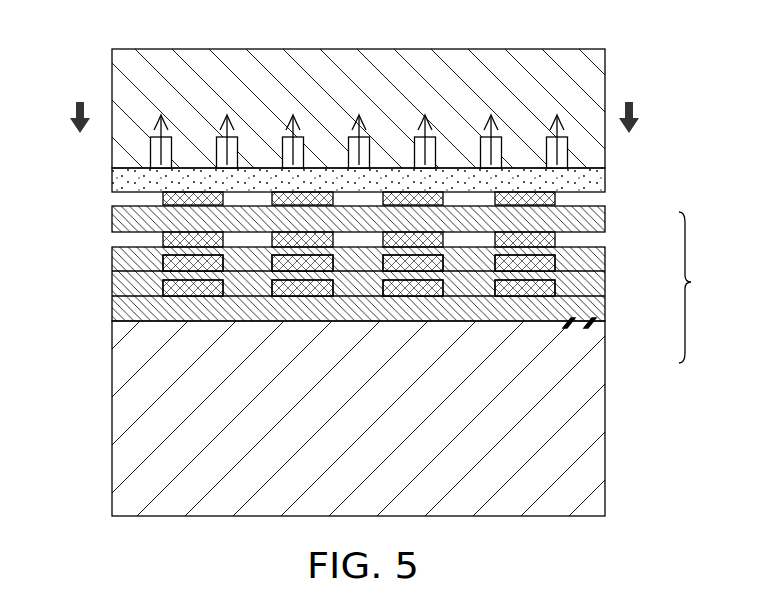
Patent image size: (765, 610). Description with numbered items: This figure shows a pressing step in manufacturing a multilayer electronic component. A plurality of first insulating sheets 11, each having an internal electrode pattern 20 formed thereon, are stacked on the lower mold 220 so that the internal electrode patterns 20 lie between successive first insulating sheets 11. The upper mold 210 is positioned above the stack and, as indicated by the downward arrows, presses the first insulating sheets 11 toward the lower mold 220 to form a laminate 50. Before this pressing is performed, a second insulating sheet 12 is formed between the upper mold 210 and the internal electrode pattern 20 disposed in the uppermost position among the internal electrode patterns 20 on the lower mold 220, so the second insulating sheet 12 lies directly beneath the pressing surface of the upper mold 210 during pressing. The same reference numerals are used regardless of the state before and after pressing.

The upper mold 210 is at (596, 66).
The lower mold 220 is at (605, 432).
The second insulating sheet 12 is at (112, 171).
The first insulating sheet 11 is at (112, 226).
The internal electrode pattern 20 is at (163, 196).
The laminate 50 is at (700, 287).